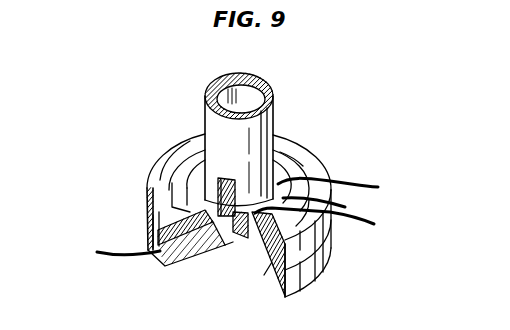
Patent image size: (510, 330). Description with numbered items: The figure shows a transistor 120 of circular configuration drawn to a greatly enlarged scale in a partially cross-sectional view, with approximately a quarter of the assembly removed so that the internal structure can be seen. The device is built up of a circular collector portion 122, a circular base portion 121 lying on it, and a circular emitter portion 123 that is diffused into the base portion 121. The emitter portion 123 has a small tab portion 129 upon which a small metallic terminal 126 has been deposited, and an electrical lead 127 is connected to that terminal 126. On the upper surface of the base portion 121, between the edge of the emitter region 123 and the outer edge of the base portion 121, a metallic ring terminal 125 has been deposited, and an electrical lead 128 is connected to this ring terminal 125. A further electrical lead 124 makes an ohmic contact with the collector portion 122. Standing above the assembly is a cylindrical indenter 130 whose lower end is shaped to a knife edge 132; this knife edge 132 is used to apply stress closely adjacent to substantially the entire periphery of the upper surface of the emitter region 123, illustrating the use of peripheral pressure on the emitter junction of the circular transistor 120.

The transistor 120 is at (367, 295).
The base portion 121 is at (152, 240).
The collector portion 122 is at (264, 275).
The emitter portion 123 is at (233, 243).
The electrical lead 124 is at (140, 257).
The ring terminal 125 is at (180, 147).
The metallic terminal 126 is at (303, 166).
The electrical lead 127 is at (341, 180).
The electrical lead 128 is at (346, 221).
The tab portion 129 is at (327, 194).
The cylindrical indenter 130 is at (277, 120).
The knife edge 132 is at (169, 170).